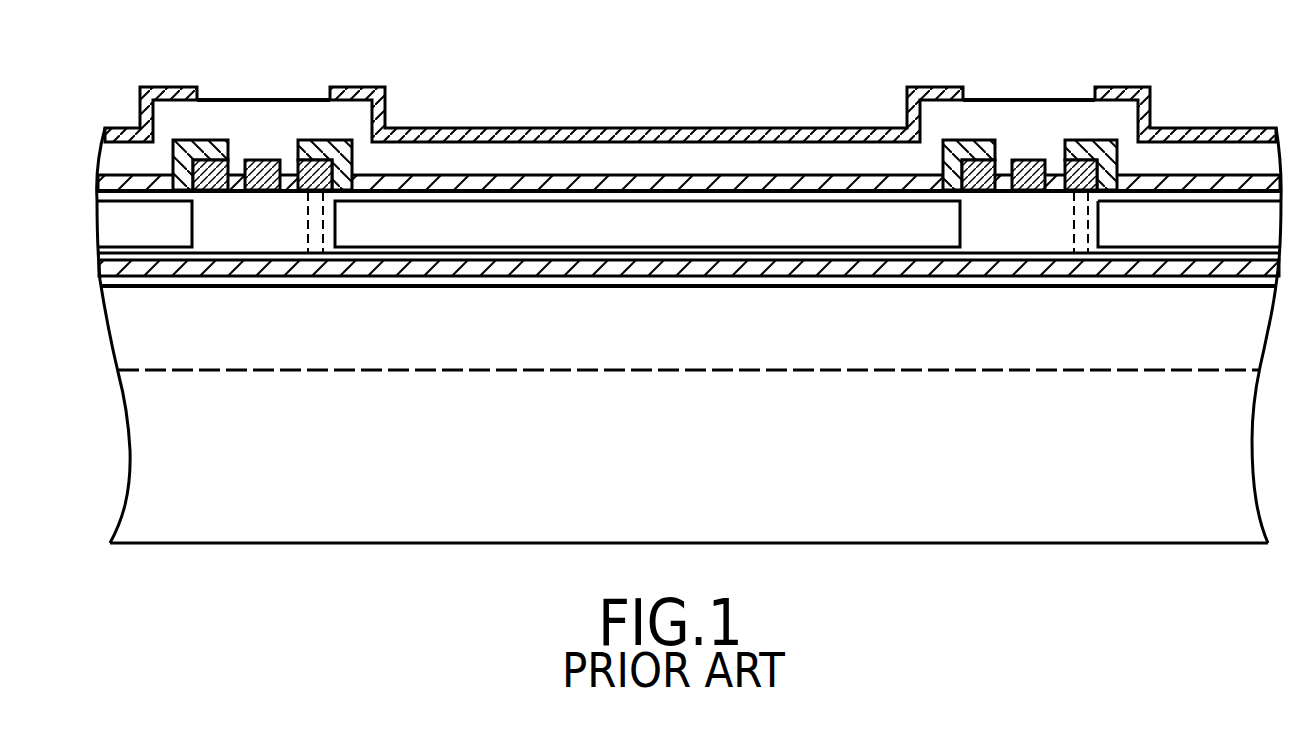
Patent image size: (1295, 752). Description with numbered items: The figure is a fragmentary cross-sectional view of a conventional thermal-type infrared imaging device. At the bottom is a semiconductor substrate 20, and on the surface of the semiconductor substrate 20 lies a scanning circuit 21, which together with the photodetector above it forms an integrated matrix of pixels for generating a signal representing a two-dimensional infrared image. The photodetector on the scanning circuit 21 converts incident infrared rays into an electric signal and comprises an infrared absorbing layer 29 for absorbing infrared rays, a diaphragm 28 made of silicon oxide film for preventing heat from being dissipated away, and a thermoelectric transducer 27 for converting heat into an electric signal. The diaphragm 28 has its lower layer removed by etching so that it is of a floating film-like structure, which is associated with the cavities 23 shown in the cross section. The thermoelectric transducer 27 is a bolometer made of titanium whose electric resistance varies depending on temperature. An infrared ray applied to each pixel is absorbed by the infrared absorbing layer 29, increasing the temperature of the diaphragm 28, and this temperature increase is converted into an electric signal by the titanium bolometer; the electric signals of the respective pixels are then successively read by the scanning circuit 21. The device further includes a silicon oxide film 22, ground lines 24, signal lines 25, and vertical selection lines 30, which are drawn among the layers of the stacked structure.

The semiconductor substrate 20 is at (130, 463).
The scanning circuit 21 is at (118, 339).
The silicon oxide film 22 is at (233, 213).
The cavities 23 is at (627, 204).
The ground lines 24 is at (263, 159).
The signal lines 25 is at (996, 158).
The thermoelectric transducer 27 is at (442, 182).
The diaphragm 28 is at (693, 152).
The infrared absorbing layer 29 is at (513, 128).
The vertical selection lines 30 is at (568, 264).